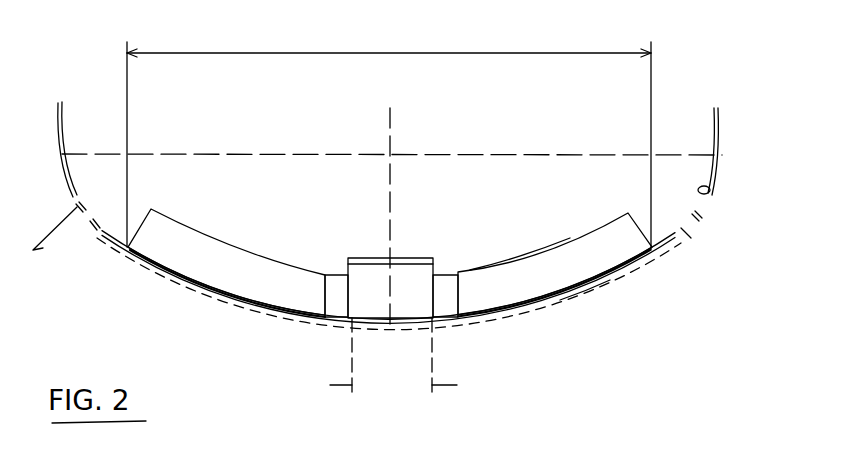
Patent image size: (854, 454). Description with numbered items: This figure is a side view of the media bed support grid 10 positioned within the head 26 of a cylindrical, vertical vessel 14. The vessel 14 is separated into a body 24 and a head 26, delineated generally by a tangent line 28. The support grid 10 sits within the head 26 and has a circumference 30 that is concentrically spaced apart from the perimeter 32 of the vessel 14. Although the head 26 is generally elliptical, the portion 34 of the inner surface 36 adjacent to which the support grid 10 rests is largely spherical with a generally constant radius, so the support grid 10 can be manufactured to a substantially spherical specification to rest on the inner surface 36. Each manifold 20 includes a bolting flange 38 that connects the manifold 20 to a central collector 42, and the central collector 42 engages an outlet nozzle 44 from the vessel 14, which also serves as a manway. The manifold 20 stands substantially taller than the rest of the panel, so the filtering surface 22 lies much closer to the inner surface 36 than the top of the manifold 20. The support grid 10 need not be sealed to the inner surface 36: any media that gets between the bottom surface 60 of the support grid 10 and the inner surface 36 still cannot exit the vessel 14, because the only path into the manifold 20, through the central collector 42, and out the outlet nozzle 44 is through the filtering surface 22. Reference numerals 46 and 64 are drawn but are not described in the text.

The media bed support grid 10 is at (615, 279).
The vessel 14 is at (724, 140).
The manifold 20 is at (243, 249).
The filtering surface 22 is at (193, 278).
The body 24 is at (508, 106).
The head 26 is at (550, 208).
The tangent line 28 is at (188, 153).
The circumference 30 is at (668, 249).
The perimeter 32 is at (65, 108).
The portion of inner surface 34 is at (251, 53).
The inner surface 36 is at (712, 192).
The bolting flange 38 is at (460, 297).
The central collector 42 is at (434, 302).
The outlet nozzle 44 is at (428, 338).
The top surface 46 is at (410, 258).
The bottom surface 60 is at (585, 295).
The mounting surface 64 is at (510, 263).